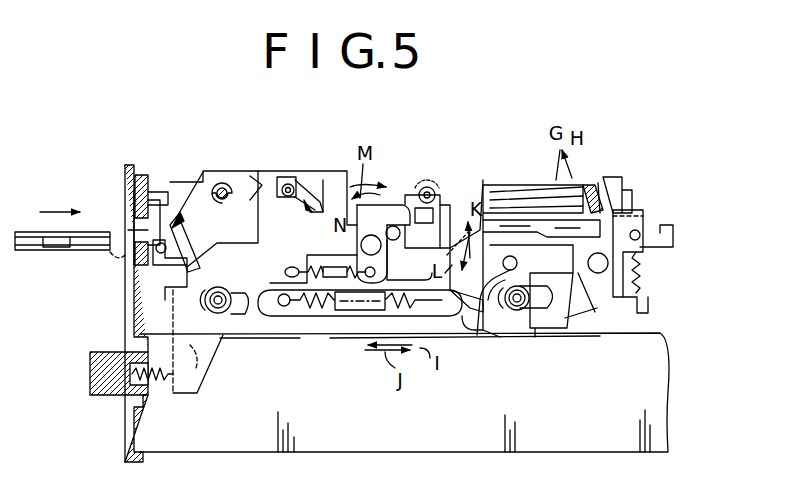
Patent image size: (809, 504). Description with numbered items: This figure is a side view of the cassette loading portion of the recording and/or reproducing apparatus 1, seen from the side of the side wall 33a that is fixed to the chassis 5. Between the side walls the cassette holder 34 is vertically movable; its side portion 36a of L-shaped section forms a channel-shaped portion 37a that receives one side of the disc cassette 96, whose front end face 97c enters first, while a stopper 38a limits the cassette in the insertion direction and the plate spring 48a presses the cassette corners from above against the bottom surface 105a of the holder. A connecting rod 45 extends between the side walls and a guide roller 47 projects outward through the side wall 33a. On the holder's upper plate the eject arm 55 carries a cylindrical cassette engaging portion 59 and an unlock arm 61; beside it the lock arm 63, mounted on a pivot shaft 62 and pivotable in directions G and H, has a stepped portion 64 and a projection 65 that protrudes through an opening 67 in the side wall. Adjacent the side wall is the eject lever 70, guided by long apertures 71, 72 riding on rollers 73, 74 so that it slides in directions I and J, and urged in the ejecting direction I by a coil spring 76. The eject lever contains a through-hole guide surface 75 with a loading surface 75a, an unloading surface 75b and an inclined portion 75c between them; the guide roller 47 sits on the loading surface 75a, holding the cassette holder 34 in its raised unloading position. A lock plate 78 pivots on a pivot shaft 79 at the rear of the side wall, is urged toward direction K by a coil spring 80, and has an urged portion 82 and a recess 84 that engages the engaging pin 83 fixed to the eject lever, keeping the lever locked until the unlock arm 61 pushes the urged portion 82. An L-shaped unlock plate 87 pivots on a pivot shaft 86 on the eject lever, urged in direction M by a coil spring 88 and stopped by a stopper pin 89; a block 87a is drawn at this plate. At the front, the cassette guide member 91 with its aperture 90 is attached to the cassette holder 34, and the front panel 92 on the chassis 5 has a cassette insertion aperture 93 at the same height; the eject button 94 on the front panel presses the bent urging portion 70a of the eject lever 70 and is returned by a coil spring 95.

The recording and/or reproducing apparatus 1 is at (630, 142).
The chassis 5 is at (358, 447).
The side wall 33a is at (244, 171).
The cassette holder 34 is at (200, 267).
The side portion 36a is at (165, 192).
The channel-shaped portion 37a is at (203, 172).
The stopper 38a is at (668, 235).
The connecting rod 45 is at (223, 183).
The guide roller 47 is at (278, 193).
The plate spring 48a is at (550, 192).
The eject arm 55 is at (590, 185).
The cassette engaging portion 59 is at (640, 230).
The unlock arm 61 is at (510, 185).
The pivot shaft 62 is at (428, 187).
The lock arm 63 is at (500, 220).
The stepped portion 64 is at (615, 185).
The projection 65 is at (450, 205).
The opening 67 is at (472, 215).
The eject lever 70 is at (288, 320).
The urging portion 70a is at (203, 378).
The long aperture 71 is at (250, 316).
The long aperture 72 is at (548, 310).
The roller 73 is at (232, 312).
The roller 74 is at (519, 310).
The guide surface 75 is at (310, 200).
The parallel portion (loading surface) 75a is at (285, 178).
The parallel portion (unloading surface) 75b is at (324, 182).
The inclined portion 75c is at (308, 207).
The coil spring 76 is at (330, 317).
The lock plate 78 is at (580, 310).
The pivot shaft 79 is at (601, 275).
The coil spring 80 is at (641, 290).
The urged portion 82 is at (600, 183).
The engaging pin 83 is at (482, 335).
The recess 84 is at (518, 260).
The pivot shaft 86 is at (357, 250).
The unlock plate 87 is at (390, 205).
The lever block 87a is at (420, 195).
The coil spring 88 is at (318, 263).
The stopper pin 89 is at (396, 240).
The aperture 90 is at (126, 247).
The cassette guide member 91 is at (147, 176).
The front panel 92 is at (126, 418).
The cassette insertion aperture 93 is at (124, 228).
The eject button 94 is at (90, 377).
The coil spring 95 is at (162, 385).
The disc cassette 96 is at (35, 232).
The front end face 97c is at (108, 258).
The bottom surface 105a is at (176, 260).